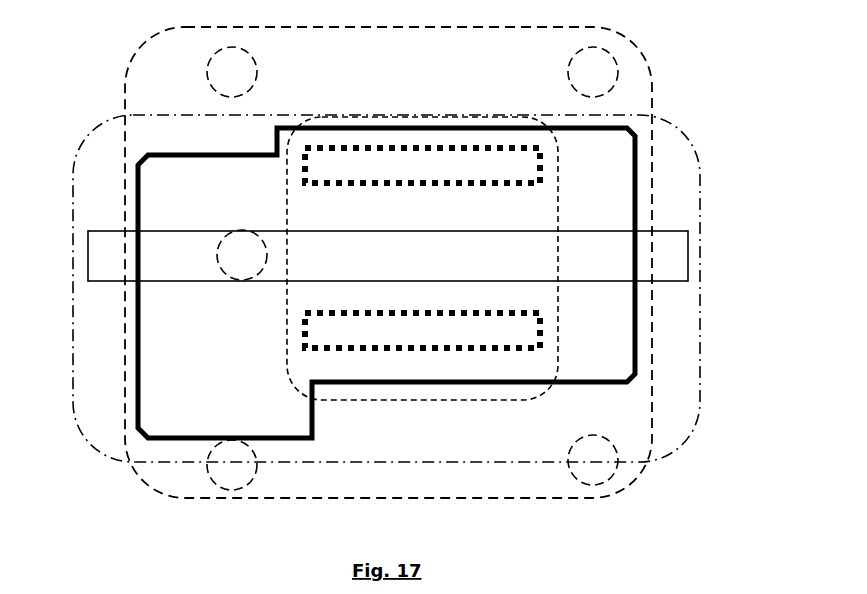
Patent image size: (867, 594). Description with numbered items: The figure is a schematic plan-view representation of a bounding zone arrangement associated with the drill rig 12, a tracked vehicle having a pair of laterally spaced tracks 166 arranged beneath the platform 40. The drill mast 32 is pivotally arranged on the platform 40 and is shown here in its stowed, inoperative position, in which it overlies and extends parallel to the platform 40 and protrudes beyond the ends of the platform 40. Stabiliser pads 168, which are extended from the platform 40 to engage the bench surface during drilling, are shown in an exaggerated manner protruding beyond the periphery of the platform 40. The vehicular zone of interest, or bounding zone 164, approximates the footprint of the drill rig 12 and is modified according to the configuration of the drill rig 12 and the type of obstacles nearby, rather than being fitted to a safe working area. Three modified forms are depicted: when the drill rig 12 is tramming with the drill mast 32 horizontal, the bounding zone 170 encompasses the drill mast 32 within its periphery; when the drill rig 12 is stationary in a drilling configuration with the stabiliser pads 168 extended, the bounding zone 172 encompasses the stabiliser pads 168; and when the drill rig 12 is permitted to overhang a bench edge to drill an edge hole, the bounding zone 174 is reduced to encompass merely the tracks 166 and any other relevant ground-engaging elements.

The drill rig 12 is at (158, 138).
The drill mast 32 is at (690, 254).
The platform 40 is at (618, 335).
The bounding zone 164 is at (727, 225).
The tracks 166 is at (440, 142).
The stabiliser pads 168 is at (258, 77).
The bounding zone 170 is at (700, 312).
The bounding zone 172 is at (510, 500).
The bounding zone 174 is at (287, 352).